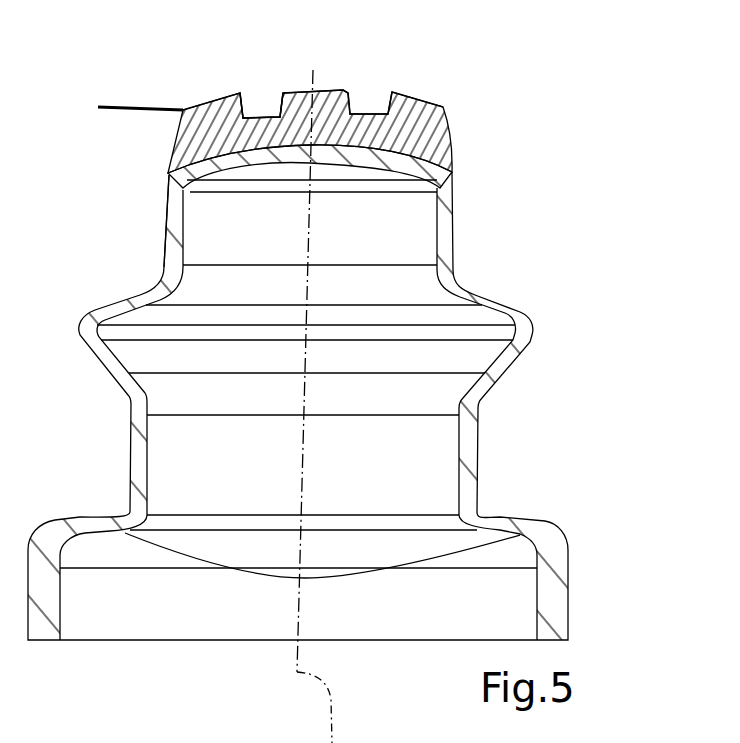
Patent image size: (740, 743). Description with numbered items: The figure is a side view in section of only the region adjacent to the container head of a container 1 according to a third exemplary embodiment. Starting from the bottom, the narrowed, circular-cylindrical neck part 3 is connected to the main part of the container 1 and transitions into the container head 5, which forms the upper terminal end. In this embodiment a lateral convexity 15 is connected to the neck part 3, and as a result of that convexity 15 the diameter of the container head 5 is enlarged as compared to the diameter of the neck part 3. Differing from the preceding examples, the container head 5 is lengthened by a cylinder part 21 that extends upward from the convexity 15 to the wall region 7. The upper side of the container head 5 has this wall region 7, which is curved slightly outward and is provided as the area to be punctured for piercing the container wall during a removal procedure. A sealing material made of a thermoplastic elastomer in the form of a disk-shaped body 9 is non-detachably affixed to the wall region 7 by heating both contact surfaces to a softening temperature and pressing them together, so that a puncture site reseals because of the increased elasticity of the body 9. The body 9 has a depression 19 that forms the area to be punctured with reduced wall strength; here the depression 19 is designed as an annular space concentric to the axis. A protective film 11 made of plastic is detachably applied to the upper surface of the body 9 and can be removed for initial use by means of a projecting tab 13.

The container 1 is at (552, 622).
The neck part 3 is at (470, 462).
The container head 5 is at (448, 227).
The wall region 7 is at (187, 182).
The disk-shaped body 9 is at (413, 130).
The protective film 11 is at (413, 97).
The projecting tab 13 is at (118, 104).
The lateral convexity 15 is at (533, 337).
The depression 19 is at (265, 116).
The cylinder part 21 is at (167, 238).